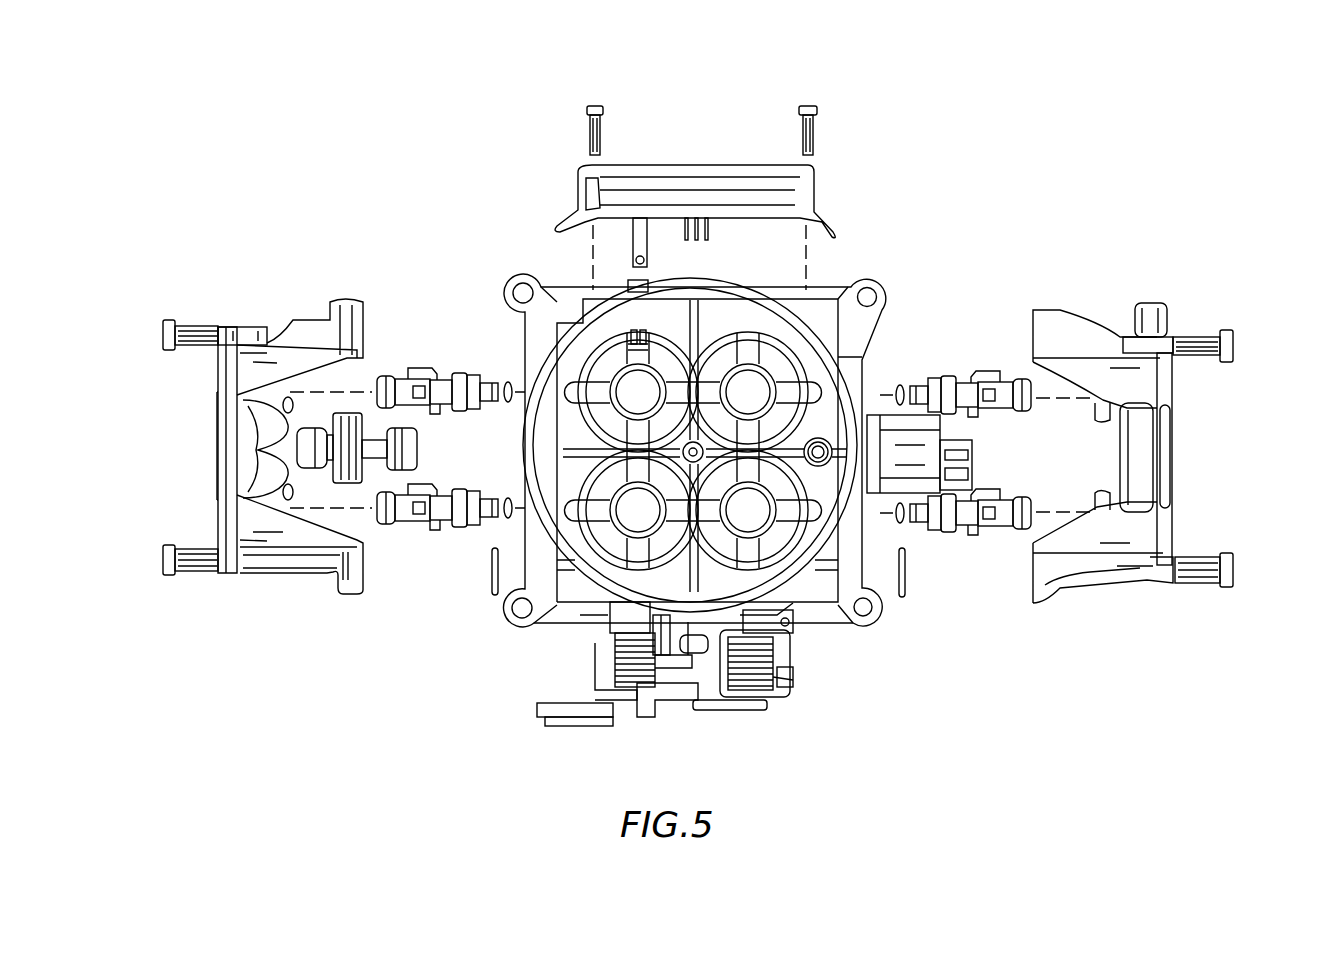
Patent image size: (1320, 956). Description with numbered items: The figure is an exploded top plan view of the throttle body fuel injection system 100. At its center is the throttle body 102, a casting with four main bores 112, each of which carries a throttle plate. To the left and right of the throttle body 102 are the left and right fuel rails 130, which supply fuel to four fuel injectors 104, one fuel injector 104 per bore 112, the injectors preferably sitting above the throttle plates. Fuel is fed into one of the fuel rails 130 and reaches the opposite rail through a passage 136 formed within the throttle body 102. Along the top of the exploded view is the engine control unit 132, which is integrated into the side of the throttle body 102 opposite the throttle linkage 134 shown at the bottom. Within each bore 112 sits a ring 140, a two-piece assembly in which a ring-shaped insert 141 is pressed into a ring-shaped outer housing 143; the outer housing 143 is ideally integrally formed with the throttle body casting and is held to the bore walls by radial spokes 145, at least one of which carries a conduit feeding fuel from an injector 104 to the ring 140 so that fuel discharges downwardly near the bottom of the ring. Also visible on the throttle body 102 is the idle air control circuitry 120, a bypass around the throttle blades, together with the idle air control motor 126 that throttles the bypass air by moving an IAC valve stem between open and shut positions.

The throttle body fuel injection system 100 is at (672, 417).
The throttle body 102 is at (705, 471).
The fuel injector 104 is at (443, 530).
The main bore 112 is at (618, 540).
The idle air control circuitry 120 is at (812, 440).
The idle air control motor 126 is at (980, 473).
The fuel rail 130 is at (215, 512).
The engine control unit 132 is at (665, 167).
The throttle linkage 134 is at (563, 727).
The passage 136 is at (862, 570).
The ring 140 is at (613, 527).
The ring-shaped insert 141 is at (735, 522).
The ring-shaped outer housing 143 is at (775, 525).
The radial spoke 145 is at (673, 375).